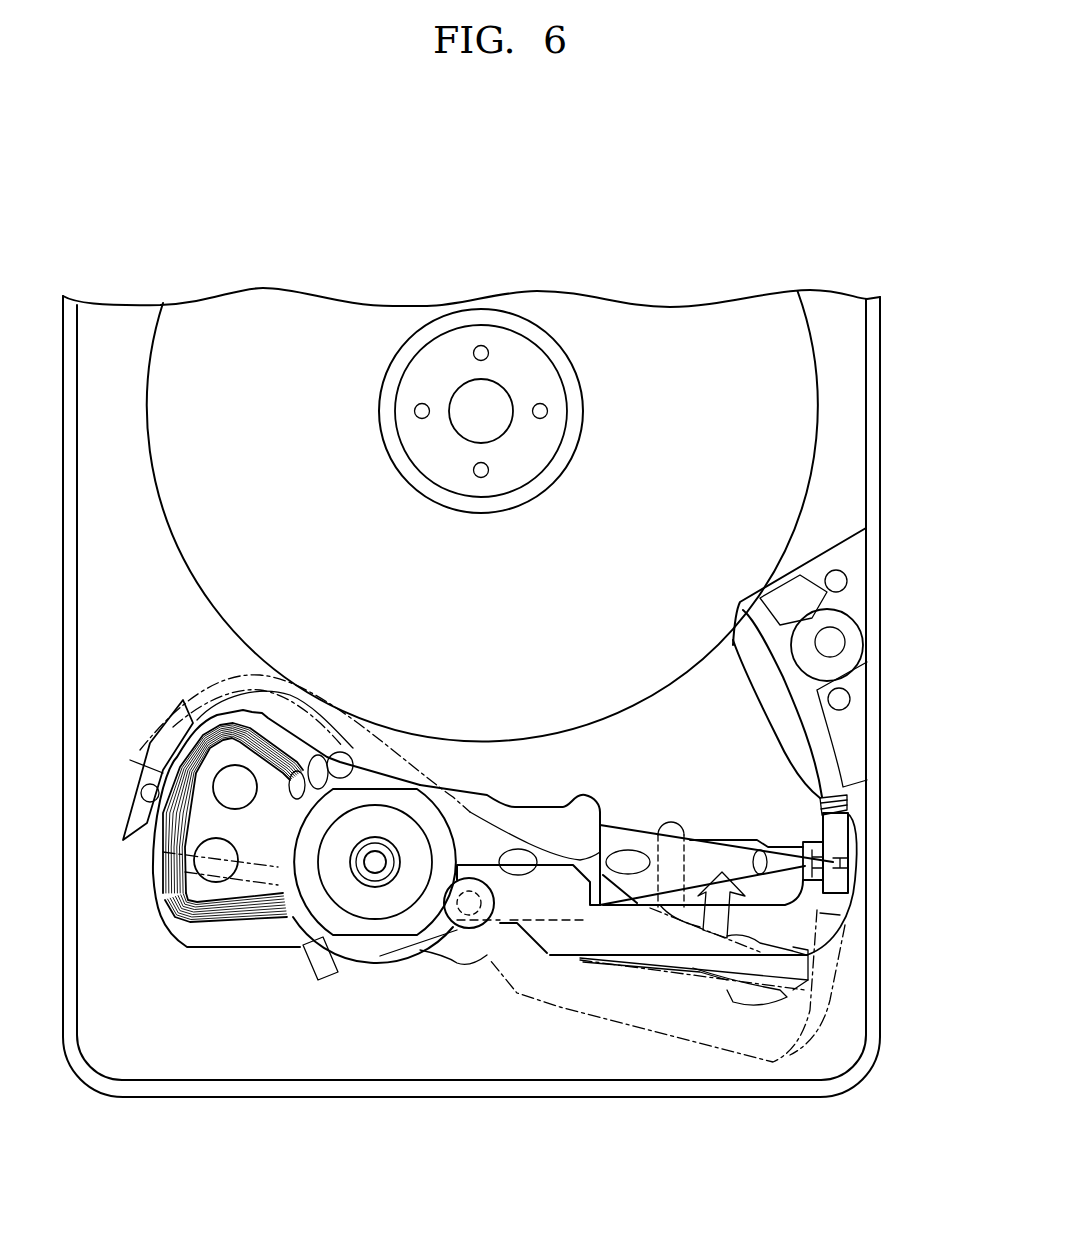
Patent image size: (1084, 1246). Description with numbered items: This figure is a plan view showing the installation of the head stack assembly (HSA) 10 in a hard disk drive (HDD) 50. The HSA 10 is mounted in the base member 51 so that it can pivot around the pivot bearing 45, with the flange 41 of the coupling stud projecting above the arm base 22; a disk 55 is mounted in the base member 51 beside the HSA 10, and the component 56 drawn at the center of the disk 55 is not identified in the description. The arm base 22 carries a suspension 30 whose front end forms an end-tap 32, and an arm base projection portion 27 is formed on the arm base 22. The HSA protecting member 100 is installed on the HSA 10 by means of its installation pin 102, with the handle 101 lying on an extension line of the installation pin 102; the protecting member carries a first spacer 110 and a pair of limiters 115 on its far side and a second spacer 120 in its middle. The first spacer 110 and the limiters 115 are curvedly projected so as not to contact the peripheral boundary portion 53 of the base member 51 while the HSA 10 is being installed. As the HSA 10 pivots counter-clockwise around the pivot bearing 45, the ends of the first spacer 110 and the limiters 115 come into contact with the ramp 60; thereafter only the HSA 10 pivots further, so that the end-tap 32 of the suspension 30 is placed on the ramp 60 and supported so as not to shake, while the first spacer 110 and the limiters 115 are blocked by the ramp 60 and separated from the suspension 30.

The hard disk drive 50 is at (763, 237).
The base member 51 is at (215, 1055).
The peripheral boundary portion 53 is at (872, 952).
The disk 55 is at (805, 413).
The spindle motor hub 56 is at (540, 456).
The ramp 60 is at (853, 622).
The flange 41 is at (302, 920).
The pivot bearing 45 is at (373, 907).
The arm base 22 is at (520, 815).
The head stack assembly 10 is at (634, 808).
The second spacer 120 is at (672, 825).
The first spacer 110 is at (797, 842).
The suspension 30 is at (703, 840).
The end-tap 32 is at (849, 860).
The limiters 115 is at (850, 884).
The installation pin 102 is at (460, 925).
The handle 101 is at (490, 958).
The arm base projection portion 27 is at (583, 927).
The HSA protecting member 100 is at (667, 968).